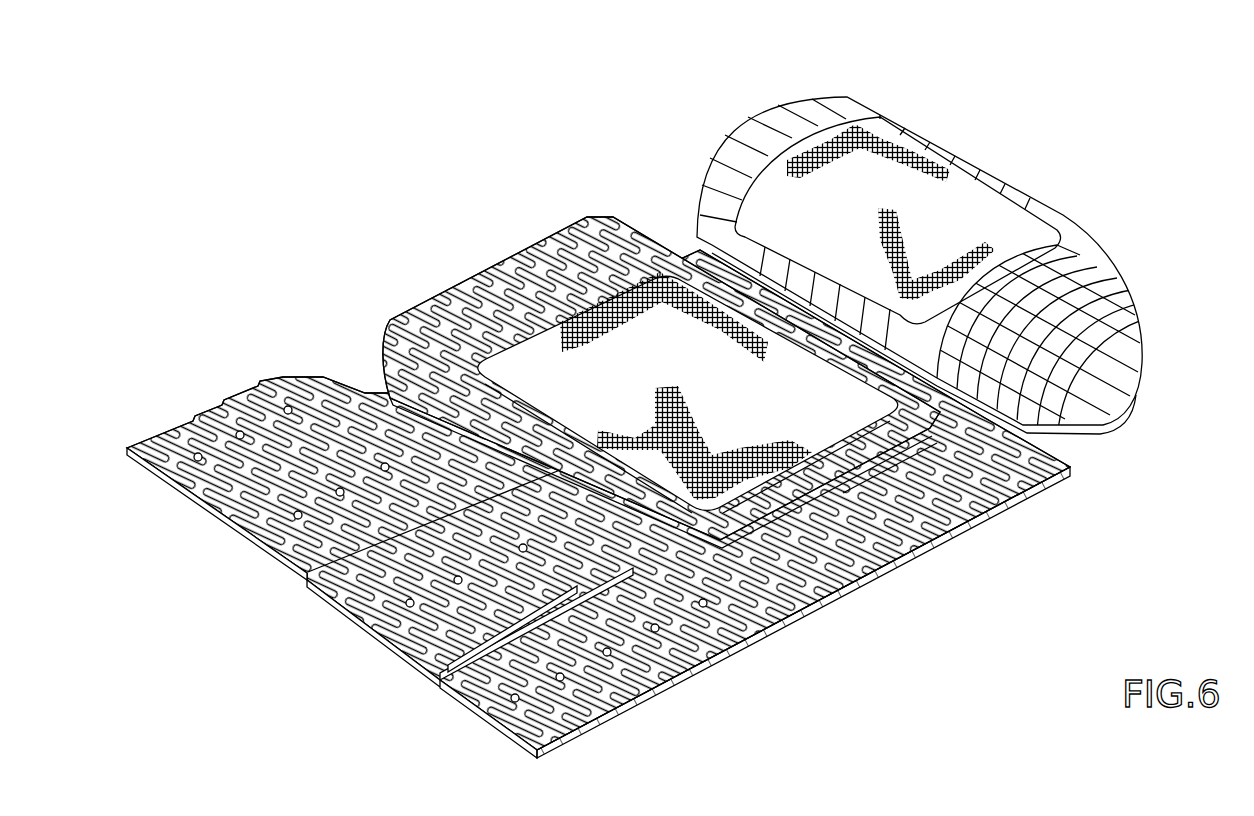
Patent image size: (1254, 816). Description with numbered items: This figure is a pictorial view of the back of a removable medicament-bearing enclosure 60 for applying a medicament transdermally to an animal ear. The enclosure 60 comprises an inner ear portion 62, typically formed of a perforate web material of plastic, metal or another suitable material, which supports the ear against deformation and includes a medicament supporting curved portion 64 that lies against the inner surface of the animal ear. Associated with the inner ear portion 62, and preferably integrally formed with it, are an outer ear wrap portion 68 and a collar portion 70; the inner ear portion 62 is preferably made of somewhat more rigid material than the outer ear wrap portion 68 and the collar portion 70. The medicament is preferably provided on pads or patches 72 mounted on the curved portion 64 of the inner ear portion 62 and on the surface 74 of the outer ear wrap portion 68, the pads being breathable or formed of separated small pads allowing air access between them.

The enclosure 60 is at (428, 100).
The inner ear portion 62 is at (1182, 447).
The medicament supporting curved portion 64 is at (1075, 260).
The outer ear wrap portion 68 is at (426, 258).
The collar portion 70 is at (847, 620).
The pads or patches 72 is at (562, 340).
The surface of outer ear wrap 74 is at (907, 550).